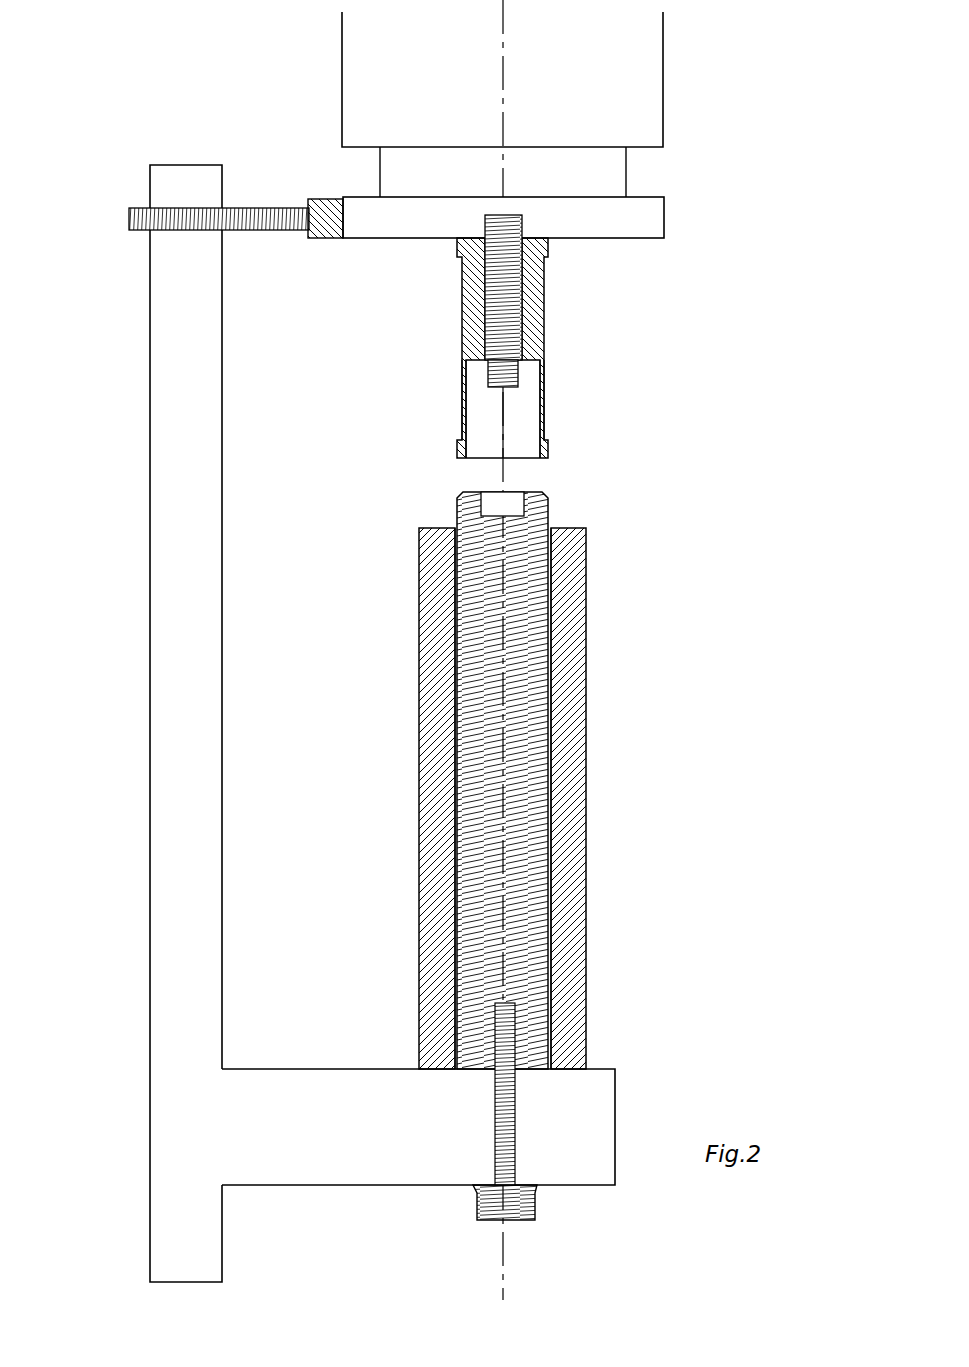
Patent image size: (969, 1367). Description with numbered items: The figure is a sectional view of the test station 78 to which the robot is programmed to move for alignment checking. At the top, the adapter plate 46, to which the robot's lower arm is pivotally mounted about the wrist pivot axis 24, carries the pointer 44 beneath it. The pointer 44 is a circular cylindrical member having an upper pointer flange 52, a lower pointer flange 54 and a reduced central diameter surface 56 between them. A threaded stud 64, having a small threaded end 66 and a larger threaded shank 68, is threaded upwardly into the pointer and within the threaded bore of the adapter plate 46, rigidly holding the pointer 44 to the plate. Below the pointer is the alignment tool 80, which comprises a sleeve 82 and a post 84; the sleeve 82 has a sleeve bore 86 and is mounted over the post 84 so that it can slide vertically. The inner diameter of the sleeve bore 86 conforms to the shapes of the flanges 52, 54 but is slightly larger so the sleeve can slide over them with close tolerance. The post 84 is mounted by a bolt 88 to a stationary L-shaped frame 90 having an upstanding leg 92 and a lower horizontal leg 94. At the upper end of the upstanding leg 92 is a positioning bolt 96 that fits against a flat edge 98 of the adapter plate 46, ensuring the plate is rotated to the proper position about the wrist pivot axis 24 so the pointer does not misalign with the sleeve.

The wrist pivot axis 24 is at (504, 36).
The adapter plate 46 is at (650, 198).
The upper pointer flange 52 is at (460, 250).
The larger threaded shank 68 is at (513, 325).
The small threaded end 66 is at (492, 373).
The threaded stud 64 is at (500, 388).
The pointer 44 is at (509, 337).
The reduced central diameter surface 56 is at (545, 410).
The lower pointer flange 54 is at (458, 452).
The test station 78 is at (559, 875).
The alignment tool 80 is at (589, 681).
The sleeve 82 is at (420, 657).
The post 84 is at (540, 820).
The sleeve bore 86 is at (448, 752).
The bolt 88 is at (518, 1222).
The L-shaped frame 90 is at (366, 723).
The upstanding leg 92 is at (150, 337).
The lower horizontal leg 94 is at (588, 1069).
The positioning bolt 96 is at (280, 207).
The flat edge 98 is at (348, 204).